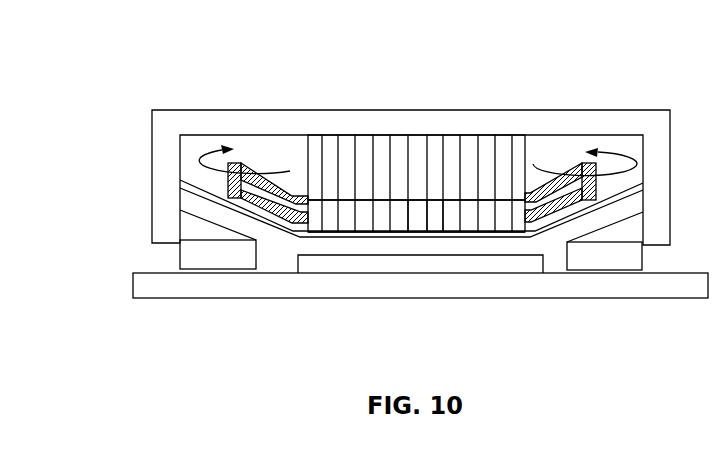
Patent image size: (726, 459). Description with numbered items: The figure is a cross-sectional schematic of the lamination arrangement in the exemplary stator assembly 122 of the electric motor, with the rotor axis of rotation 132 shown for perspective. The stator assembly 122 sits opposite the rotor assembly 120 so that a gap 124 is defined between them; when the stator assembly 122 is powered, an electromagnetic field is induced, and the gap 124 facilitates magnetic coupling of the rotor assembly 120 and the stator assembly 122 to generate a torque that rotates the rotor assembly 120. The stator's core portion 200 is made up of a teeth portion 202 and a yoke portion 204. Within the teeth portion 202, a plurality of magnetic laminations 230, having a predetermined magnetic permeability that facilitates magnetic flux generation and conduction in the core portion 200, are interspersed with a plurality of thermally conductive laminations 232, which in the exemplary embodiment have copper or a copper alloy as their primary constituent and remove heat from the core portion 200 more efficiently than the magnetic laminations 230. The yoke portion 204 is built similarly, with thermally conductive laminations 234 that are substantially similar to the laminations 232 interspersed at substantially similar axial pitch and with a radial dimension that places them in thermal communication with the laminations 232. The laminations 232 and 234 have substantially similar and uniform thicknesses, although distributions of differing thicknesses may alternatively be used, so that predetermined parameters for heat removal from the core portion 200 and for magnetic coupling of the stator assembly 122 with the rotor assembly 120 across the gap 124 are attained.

The stator assembly 122 is at (202, 72).
The core portion 200 is at (321, 128).
The yoke portion 204 is at (291, 169).
The thermally conductive laminations 234 is at (428, 158).
The teeth portion 202 is at (330, 231).
The magnetic laminations 230 is at (387, 230).
The thermally conductive laminations 232 is at (440, 230).
The gap 124 is at (488, 247).
The rotor assembly 120 is at (447, 287).
The rotor axis of rotation 132 is at (197, 298).